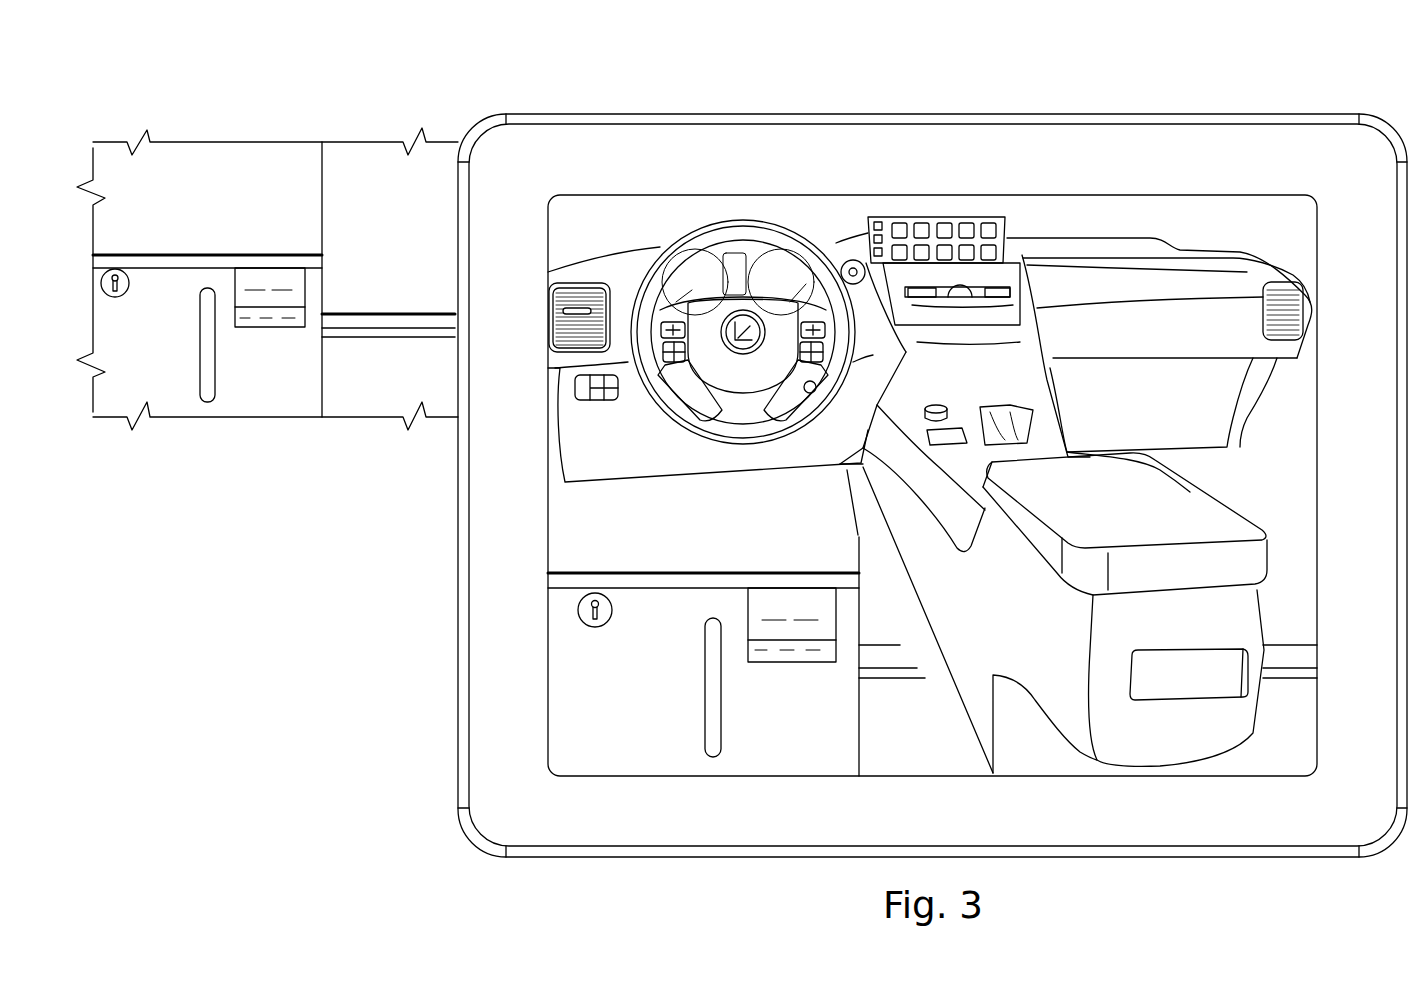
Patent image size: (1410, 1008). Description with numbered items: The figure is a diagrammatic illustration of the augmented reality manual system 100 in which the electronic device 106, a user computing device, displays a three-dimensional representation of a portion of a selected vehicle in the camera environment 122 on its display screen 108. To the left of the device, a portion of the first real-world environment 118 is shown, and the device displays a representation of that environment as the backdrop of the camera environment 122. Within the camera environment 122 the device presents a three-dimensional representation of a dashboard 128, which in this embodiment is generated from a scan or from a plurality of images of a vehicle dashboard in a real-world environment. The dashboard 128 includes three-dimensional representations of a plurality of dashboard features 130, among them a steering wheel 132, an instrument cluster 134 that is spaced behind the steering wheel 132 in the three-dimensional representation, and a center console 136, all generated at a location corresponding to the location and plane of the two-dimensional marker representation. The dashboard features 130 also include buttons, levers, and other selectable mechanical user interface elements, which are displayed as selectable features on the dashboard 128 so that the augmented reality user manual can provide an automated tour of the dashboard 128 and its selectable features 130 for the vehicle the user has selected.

The augmented reality manual system 100 is at (1233, 64).
The electronic device 106 is at (933, 133).
The display screen 108 is at (1089, 205).
The first real-world environment 118 is at (214, 139).
The camera environment 122 is at (1156, 194).
The dashboard 128 is at (749, 491).
The dashboard features 130 is at (851, 258).
The steering wheel 132 is at (690, 245).
The instrument cluster 134 is at (782, 266).
The center console 136 is at (1035, 302).